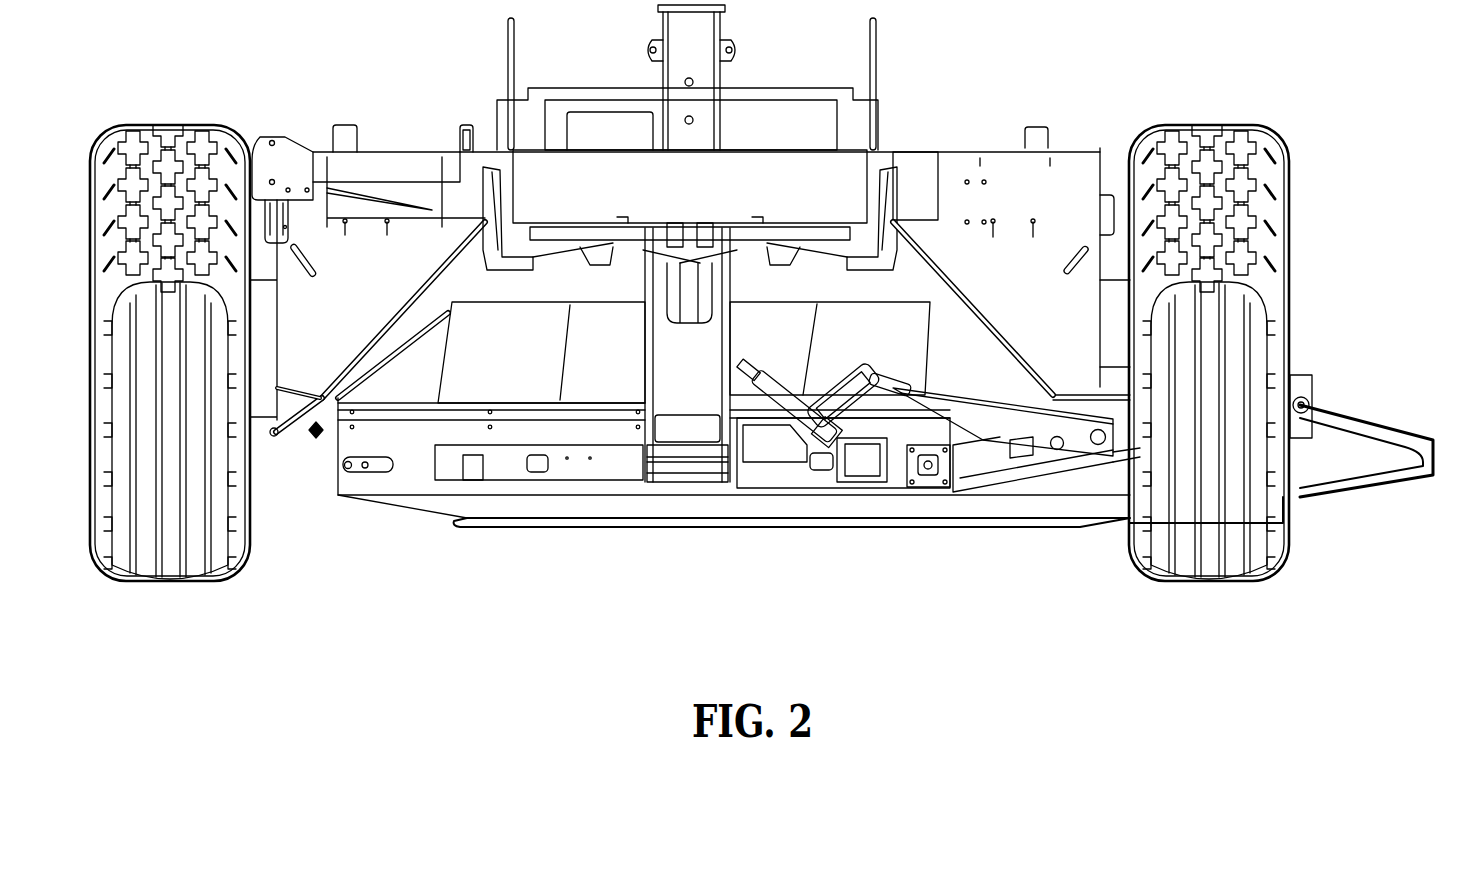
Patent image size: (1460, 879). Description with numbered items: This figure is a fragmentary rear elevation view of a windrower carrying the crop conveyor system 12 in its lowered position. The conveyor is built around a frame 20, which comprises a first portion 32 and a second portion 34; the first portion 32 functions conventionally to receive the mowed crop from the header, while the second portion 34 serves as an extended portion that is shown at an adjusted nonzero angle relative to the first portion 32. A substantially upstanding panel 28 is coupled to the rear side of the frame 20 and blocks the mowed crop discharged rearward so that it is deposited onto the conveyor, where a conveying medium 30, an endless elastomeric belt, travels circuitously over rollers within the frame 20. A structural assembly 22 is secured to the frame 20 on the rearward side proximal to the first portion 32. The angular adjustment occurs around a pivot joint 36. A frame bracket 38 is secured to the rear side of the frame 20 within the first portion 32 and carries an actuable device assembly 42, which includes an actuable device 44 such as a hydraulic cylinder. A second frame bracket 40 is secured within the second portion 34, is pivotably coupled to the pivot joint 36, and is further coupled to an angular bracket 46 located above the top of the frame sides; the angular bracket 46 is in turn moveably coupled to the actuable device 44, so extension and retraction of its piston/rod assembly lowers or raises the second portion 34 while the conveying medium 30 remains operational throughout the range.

The crop conveyor system 12 is at (1362, 226).
The frame 20 is at (1433, 440).
The structural assembly 22 is at (665, 556).
The panel 28 is at (467, 373).
The conveying medium 30 is at (1341, 428).
The first portion 32 is at (877, 556).
The second portion 34 is at (1348, 513).
The pivot joint 36 is at (928, 476).
The frame bracket 38 is at (562, 468).
The frame bracket 40 is at (1002, 464).
The actuable device assembly 42 is at (875, 346).
The actuable device 44 is at (880, 390).
The angular bracket 46 is at (1008, 417).